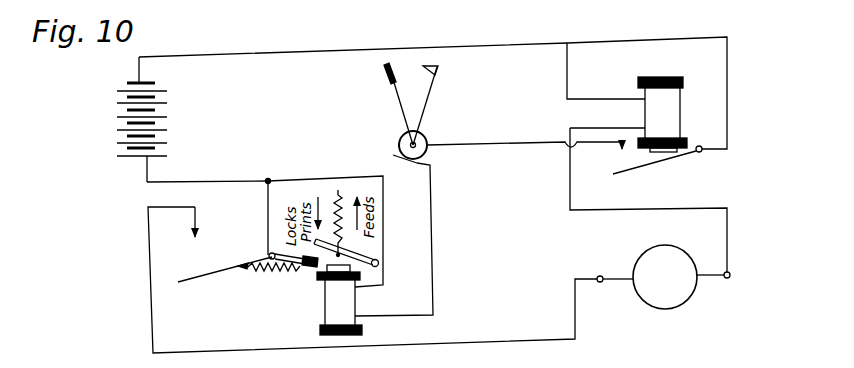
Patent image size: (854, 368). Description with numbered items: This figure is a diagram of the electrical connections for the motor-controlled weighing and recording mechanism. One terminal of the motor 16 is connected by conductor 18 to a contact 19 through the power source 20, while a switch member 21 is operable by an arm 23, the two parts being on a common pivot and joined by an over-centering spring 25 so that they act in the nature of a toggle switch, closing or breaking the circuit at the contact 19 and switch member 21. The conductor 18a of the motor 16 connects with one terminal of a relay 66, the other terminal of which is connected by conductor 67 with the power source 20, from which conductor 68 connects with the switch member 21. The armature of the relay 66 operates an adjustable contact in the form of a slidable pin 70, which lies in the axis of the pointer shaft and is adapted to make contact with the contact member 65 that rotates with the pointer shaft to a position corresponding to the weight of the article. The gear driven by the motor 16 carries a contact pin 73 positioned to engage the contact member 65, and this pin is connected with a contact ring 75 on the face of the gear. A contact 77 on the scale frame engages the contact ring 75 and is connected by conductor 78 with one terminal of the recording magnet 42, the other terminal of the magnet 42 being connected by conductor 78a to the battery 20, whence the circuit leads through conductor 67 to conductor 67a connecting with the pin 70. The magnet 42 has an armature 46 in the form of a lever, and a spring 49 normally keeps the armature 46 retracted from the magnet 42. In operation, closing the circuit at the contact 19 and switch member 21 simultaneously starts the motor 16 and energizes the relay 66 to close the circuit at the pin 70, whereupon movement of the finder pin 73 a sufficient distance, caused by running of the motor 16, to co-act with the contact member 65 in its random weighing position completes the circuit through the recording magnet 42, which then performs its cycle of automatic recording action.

The motor 16 is at (688, 300).
The conductor 18 is at (489, 343).
The conductor of the motor 18a is at (615, 211).
The contact 19 is at (199, 240).
The power source 20 is at (163, 118).
The switch member 21 is at (211, 283).
The arm 23 is at (310, 267).
The over-centering spring 25 is at (270, 272).
The magnet 42 is at (339, 300).
The armature 46 is at (362, 258).
The spring 49 is at (336, 188).
The contact member 65 is at (394, 90).
The relay 66 is at (662, 114).
The conductor 67 is at (566, 77).
The conductor 67a is at (625, 38).
The conductor 68 is at (266, 199).
The slidable pin 70 is at (660, 160).
The contact pin 73 is at (438, 72).
The contact ring 75 is at (399, 140).
The contact 77 is at (405, 175).
The conductor 78 is at (432, 228).
The conductor 78a is at (217, 181).